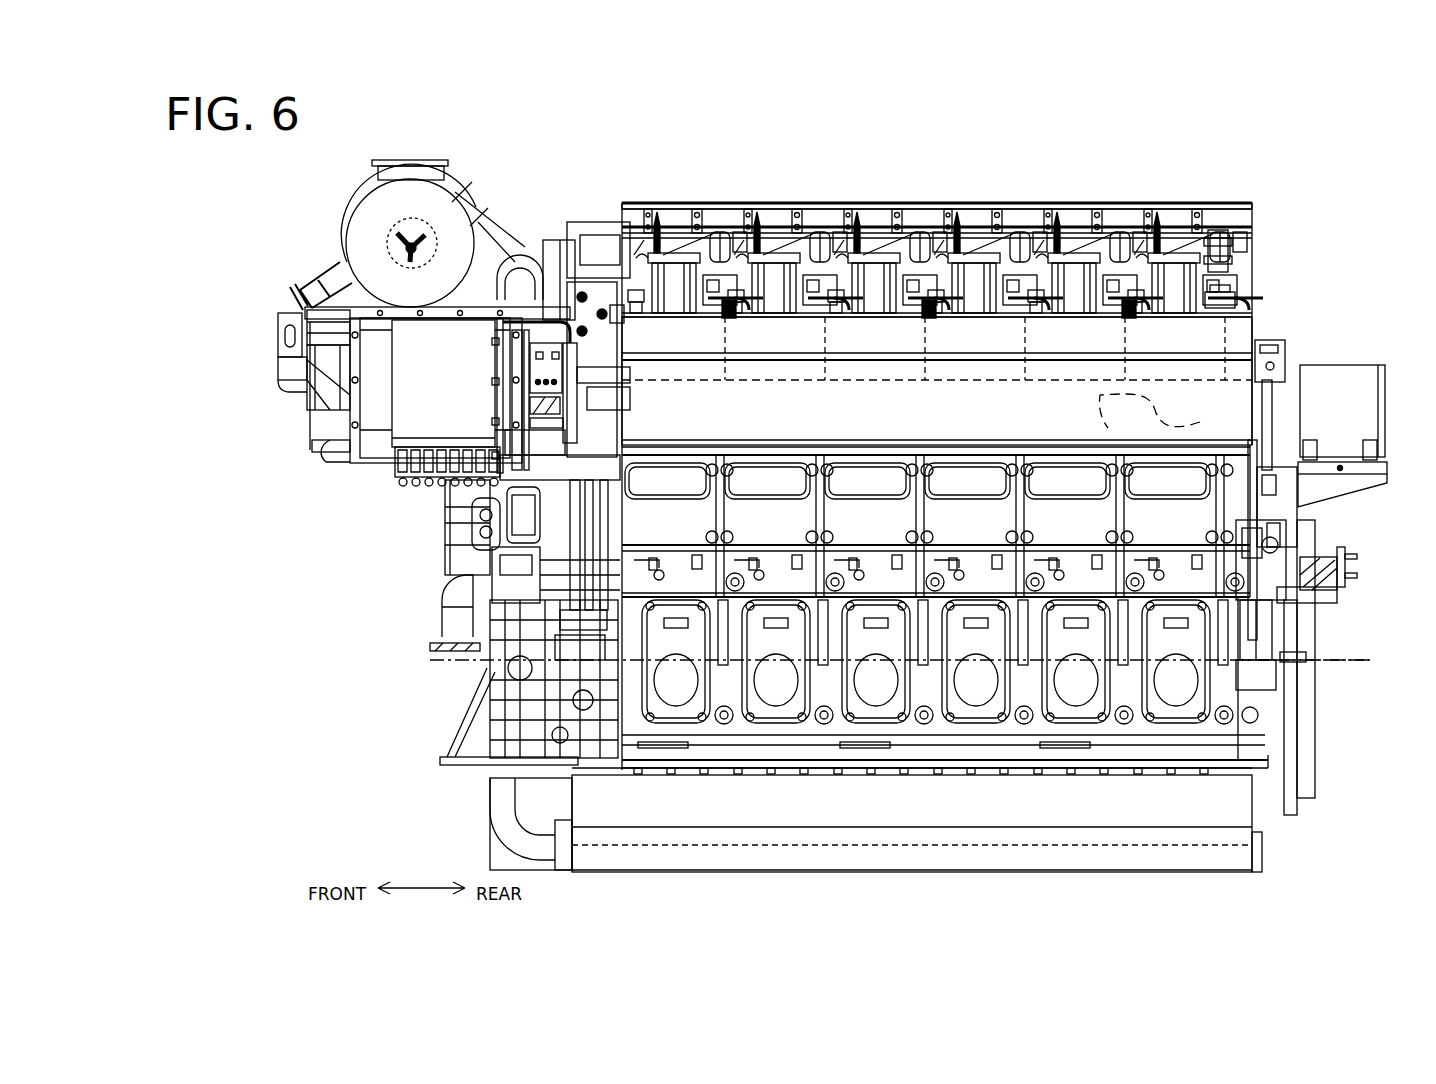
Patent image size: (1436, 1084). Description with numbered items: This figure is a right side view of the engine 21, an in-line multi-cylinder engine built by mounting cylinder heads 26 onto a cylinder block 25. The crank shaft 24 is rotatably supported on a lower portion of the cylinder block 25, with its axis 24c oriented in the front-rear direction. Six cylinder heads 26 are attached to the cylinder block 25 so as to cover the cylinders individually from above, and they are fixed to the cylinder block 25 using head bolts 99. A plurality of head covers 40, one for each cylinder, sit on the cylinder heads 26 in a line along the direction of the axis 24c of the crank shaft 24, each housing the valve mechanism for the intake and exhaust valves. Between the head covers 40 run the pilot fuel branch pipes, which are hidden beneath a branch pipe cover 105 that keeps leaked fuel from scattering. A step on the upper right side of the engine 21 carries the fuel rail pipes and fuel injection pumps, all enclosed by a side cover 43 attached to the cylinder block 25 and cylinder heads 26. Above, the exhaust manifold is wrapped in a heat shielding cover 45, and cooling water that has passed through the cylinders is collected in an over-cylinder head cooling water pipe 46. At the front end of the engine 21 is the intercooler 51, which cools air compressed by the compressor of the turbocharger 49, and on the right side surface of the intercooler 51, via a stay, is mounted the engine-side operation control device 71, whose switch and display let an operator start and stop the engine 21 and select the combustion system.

The engine 21 is at (830, 503).
The crank shaft 24 is at (1290, 758).
The axis 24c is at (1345, 668).
The cylinder block 25 is at (625, 770).
The cylinder heads 26 is at (1170, 418).
The head covers 40 is at (1176, 232).
The side cover 43 is at (1240, 332).
The heat shielding cover 45 is at (1218, 205).
The over-cylinder head cooling water pipe 46 is at (1218, 235).
The turbocharger 49 is at (343, 238).
The intercooler 51 is at (330, 445).
The engine-side operation control device 71 is at (412, 490).
The head bolts 99 is at (1218, 296).
The branch pipe cover 105 is at (1126, 330).